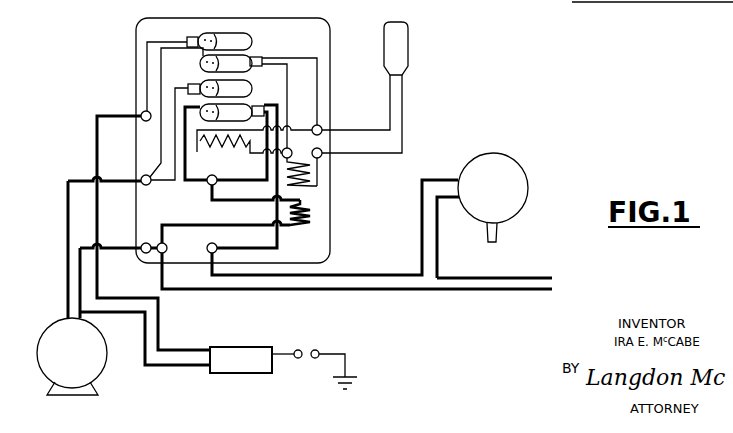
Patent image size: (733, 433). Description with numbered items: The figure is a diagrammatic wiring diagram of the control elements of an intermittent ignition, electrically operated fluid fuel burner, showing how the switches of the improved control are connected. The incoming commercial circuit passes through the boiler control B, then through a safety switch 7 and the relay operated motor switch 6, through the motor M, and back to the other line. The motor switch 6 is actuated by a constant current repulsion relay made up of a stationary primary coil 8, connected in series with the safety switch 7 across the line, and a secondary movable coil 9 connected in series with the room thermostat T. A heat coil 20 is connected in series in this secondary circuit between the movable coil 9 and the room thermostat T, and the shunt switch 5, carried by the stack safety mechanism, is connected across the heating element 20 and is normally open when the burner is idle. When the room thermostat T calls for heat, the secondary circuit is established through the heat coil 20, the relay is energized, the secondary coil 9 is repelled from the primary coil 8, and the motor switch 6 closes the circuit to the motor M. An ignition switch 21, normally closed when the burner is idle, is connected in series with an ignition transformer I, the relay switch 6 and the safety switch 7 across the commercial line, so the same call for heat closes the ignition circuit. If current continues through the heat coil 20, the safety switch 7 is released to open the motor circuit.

The ignition switch 21 is at (220, 33).
The shunt switch 5 is at (248, 58).
The motor switch 6 is at (212, 82).
The safety switch 7 is at (244, 102).
The heat coil 20 is at (230, 149).
The secondary movable coil 9 is at (313, 187).
The stationary primary coil 8 is at (312, 223).
The room thermostat T is at (402, 40).
The boiler control B is at (510, 185).
The motor M is at (85, 365).
The ignition transformer I is at (237, 357).